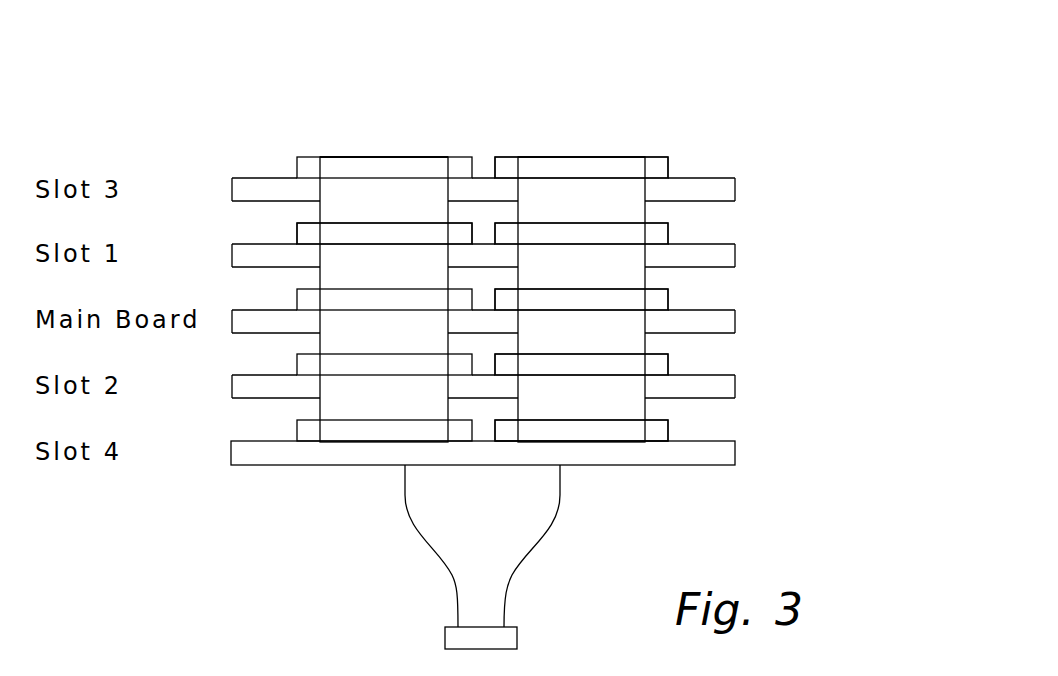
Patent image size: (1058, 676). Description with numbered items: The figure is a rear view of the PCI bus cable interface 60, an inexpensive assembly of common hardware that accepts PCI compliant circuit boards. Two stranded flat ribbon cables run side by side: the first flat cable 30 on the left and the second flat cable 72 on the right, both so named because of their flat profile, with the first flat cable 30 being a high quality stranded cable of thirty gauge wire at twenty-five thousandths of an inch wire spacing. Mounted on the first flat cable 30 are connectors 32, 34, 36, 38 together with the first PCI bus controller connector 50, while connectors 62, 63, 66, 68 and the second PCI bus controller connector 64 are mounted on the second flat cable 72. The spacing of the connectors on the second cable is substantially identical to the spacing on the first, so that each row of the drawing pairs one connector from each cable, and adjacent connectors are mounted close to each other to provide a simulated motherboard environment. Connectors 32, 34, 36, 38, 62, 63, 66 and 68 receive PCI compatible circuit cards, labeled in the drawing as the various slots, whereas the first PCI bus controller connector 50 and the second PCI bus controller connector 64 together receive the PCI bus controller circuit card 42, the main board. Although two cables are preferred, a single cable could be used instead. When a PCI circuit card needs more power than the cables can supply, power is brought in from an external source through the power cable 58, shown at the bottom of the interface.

The flat cable 1 30 is at (425, 405).
The connector 32 is at (370, 150).
The connector 34 is at (341, 215).
The connector 36 is at (287, 364).
The connector 38 is at (287, 430).
The PCI bus controller circuit card 42 is at (735, 324).
The PCI bus controller connector 1 50 is at (287, 298).
The power cable 58 is at (410, 564).
The PCI bus cable interface 60 is at (588, 150).
The connector 62 is at (668, 172).
The connector 63 is at (668, 238).
The PCI bus controller connector 2 64 is at (668, 304).
The connector 66 is at (668, 369).
The connector 68 is at (668, 435).
The flat cable 2 72 is at (628, 405).